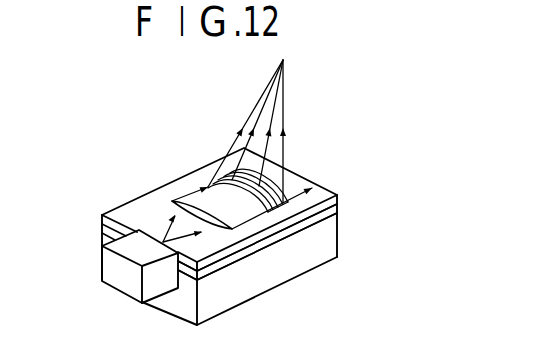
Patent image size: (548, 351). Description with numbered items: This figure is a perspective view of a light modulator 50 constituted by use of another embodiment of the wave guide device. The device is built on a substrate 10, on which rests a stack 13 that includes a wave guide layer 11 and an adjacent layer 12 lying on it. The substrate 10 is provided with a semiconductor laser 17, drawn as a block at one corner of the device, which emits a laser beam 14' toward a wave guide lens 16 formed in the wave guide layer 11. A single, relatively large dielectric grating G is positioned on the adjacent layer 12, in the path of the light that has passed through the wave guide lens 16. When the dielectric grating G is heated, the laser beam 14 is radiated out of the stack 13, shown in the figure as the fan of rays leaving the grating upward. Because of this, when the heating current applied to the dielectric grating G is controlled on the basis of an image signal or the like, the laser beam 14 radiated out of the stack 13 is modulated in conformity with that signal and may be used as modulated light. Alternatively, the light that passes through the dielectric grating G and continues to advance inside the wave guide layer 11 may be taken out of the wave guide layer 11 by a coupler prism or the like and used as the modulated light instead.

The substrate 10 is at (265, 279).
The wave guide layer 11 is at (320, 219).
The adjacent layer 12 is at (334, 202).
The stack 13 is at (373, 185).
The laser beam 14 is at (254, 144).
The laser beam 14' is at (137, 213).
The wave guide lens 16 is at (175, 200).
The semiconductor laser 17 is at (120, 267).
The light modulator 50 is at (198, 131).
The dielectric grating G is at (268, 183).